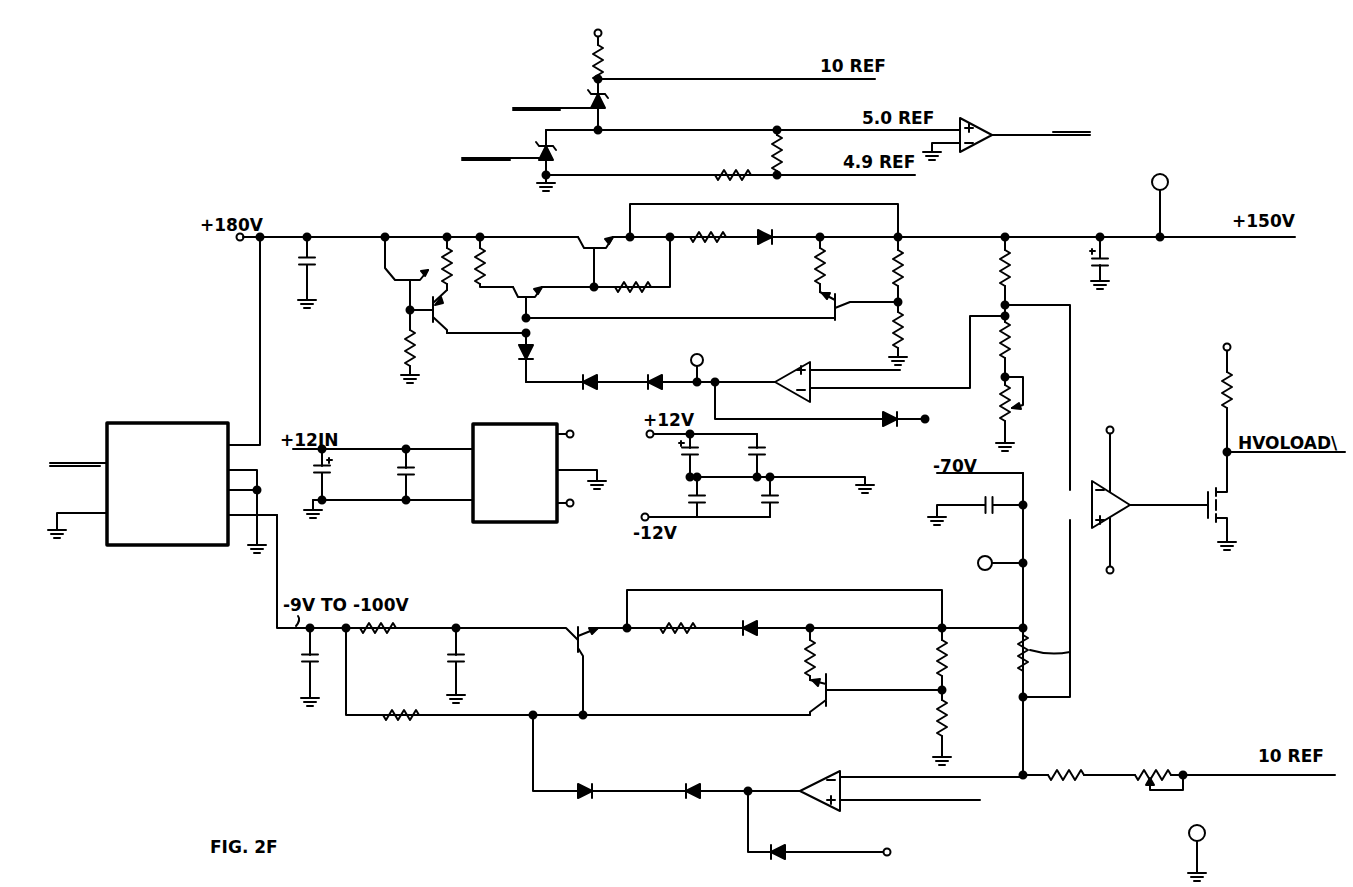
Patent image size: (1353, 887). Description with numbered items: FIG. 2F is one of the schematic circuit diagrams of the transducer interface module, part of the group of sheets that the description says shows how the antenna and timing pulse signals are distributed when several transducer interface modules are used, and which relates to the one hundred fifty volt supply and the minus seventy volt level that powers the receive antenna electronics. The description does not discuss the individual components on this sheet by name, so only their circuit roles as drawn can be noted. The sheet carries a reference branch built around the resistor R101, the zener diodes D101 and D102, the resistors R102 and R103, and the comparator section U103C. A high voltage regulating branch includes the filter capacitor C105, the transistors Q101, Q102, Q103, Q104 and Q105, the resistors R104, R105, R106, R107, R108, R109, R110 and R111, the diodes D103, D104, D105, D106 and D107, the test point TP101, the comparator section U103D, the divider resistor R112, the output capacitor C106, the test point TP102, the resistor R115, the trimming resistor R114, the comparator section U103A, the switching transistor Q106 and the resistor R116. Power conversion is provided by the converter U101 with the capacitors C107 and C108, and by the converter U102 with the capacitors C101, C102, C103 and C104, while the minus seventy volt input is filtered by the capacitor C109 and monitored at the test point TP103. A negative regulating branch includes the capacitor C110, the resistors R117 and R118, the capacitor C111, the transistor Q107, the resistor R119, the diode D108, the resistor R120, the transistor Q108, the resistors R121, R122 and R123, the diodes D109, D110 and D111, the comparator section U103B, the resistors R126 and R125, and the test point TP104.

The resistor 1K R101 is at (627, 58).
The zener diode D101 is at (590, 108).
The zener diode D102 is at (536, 152).
The resistor 20K R102 is at (735, 174).
The resistor 390 R103 is at (804, 152).
The op amp section C U103C is at (1006, 129).
The capacitor 0.01uF 500V C105 is at (343, 271).
The transistor Q101 is at (415, 272).
The resistor 1M R104 is at (388, 346).
The transistor Q102 is at (461, 311).
The resistor 10K R105 is at (434, 242).
The resistor 1K R106 is at (489, 241).
The transistor Q103 is at (520, 286).
The pass transistor Q104 is at (592, 249).
The resistor 2.2K R107 is at (637, 286).
The resistor 27 R108 is at (712, 235).
The diode D103 is at (770, 227).
The resistor 120 R109 is at (847, 264).
The transistor Q105 is at (826, 305).
The resistor 1.4K R110 is at (925, 270).
The resistor 147K R111 is at (925, 334).
The diode D104 is at (554, 356).
The diode D105 is at (608, 372).
The diode D106 is at (662, 372).
The test point TP101 is at (733, 351).
The op amp section D U103D is at (843, 366).
The diode D107 is at (930, 410).
The resistor 274K R112 is at (1032, 277).
The capacitor .1uF 400V C106 is at (1128, 269).
The test point TP102 is at (1213, 196).
The resistor 9.09K R115 is at (1034, 345).
The potentiometer 1K R114 is at (1030, 418).
The op amp section A U103A is at (1145, 499).
The MOSFET Q106 is at (1251, 501).
The resistor 100K R116 is at (1248, 386).
The DC-DC converter U101 is at (157, 475).
The capacitor 10uF C107 is at (347, 474).
The capacitor 0.1uF C108 is at (432, 474).
The DC-DC converter U102 is at (551, 462).
The capacitor 10uF C101 is at (713, 456).
The capacitor 0.1uF C102 is at (785, 456).
The capacitor 10uF C103 is at (720, 496).
The capacitor 0.1uF C104 is at (799, 496).
The capacitor 0.1uF C109 is at (977, 507).
The test point TP103 is at (936, 577).
The capacitor 0.01uF 500V C110 is at (273, 666).
The resistor 100 R117 is at (387, 650).
The capacitor 0.1uF 100V C111 is at (484, 664).
The resistor 12K R118 is at (402, 720).
The transistor Q107 is at (580, 655).
The resistor 82 R119 is at (679, 630).
The diode D108 is at (753, 617).
The resistor 39 R120 is at (839, 654).
The transistor Q108 is at (847, 694).
The resistor 4.64K R121 is at (971, 662).
The resistor 301K R122 is at (966, 729).
The potentiometer 301K R123 is at (1073, 662).
The diode D109 is at (582, 775).
The diode D110 is at (693, 775).
The diode D111 is at (845, 828).
The op amp section B U103B is at (910, 777).
The resistor 18.2K R126 is at (1079, 782).
The potentiometer 5K R125 is at (1158, 756).
The test point TP104 is at (1226, 839).